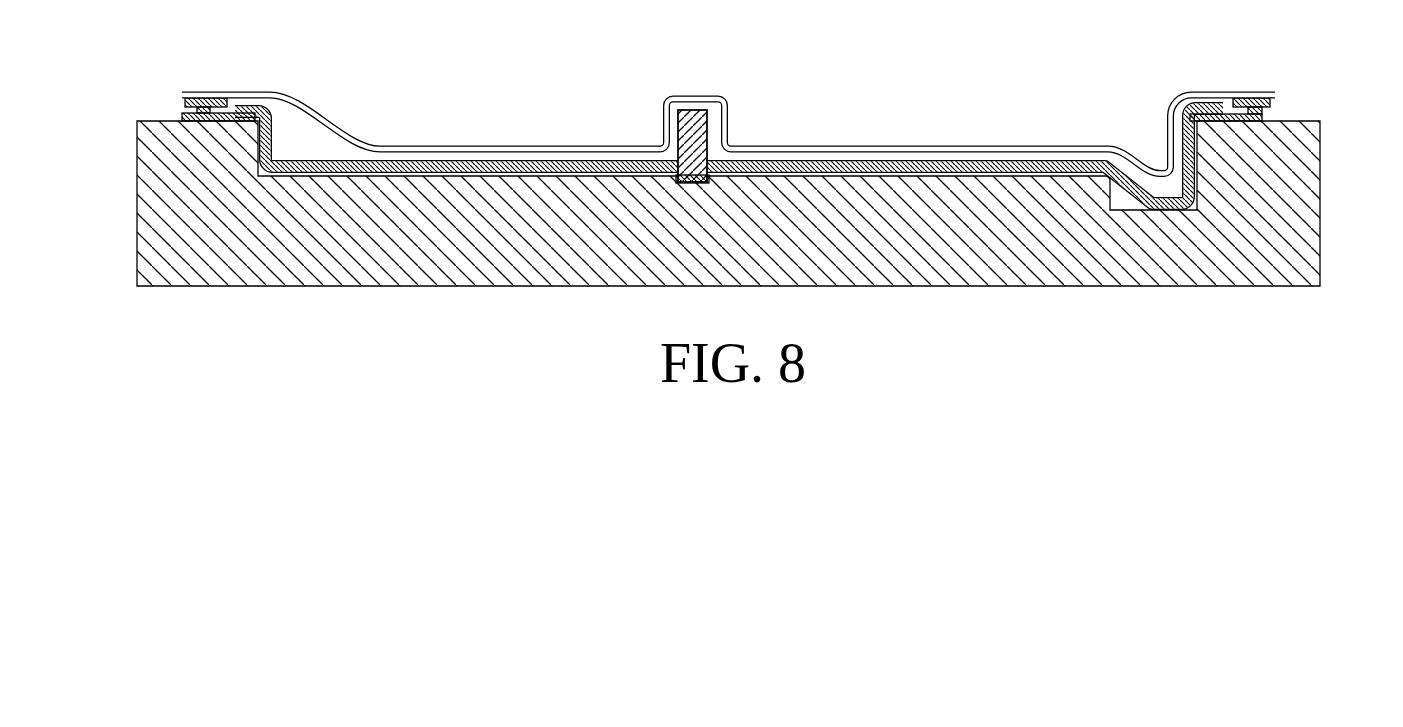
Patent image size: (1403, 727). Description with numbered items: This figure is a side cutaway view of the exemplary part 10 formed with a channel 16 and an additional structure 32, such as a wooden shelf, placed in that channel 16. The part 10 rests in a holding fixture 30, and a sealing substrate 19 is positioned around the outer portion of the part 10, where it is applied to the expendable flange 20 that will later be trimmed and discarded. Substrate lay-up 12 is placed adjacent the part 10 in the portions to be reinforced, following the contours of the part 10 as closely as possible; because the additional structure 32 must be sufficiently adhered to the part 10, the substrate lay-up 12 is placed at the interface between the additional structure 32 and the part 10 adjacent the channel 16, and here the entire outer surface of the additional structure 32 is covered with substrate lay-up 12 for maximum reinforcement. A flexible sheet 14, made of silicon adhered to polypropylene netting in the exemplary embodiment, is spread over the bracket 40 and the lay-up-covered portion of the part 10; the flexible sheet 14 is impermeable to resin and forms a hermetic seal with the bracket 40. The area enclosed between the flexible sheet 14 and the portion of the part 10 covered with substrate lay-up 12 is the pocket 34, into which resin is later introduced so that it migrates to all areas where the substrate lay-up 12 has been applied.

The part 10 is at (180, 116).
The substrate lay-up 12 is at (337, 160).
The flexible sheet 14 is at (284, 93).
The channel 16 is at (712, 183).
The sealing substrate 19 is at (226, 105).
The flange 20 is at (221, 108).
The holding fixture 30 is at (671, 243).
The additional structure 32 is at (690, 143).
The pocket 34 is at (298, 130).
The bracket 40 is at (186, 102).